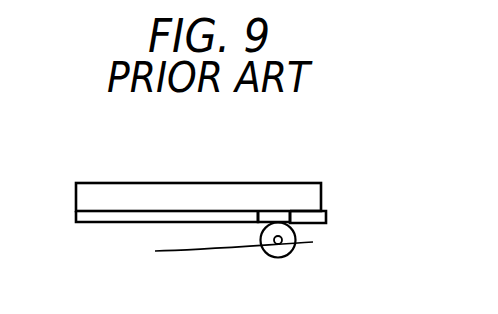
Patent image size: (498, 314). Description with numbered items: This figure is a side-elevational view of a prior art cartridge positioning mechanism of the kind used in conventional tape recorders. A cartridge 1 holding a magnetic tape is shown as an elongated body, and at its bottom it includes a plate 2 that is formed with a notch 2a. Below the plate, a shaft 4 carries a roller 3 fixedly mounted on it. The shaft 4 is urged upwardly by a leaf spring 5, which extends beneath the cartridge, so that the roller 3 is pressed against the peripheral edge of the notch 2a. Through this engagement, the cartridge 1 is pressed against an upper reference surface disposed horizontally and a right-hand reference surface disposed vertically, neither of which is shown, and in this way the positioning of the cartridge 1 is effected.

The cartridge 1 is at (300, 194).
The plate 2 is at (327, 214).
The notch 2a is at (267, 212).
The roller 3 is at (297, 238).
The shaft 4 is at (265, 240).
The leaf spring 5 is at (183, 252).